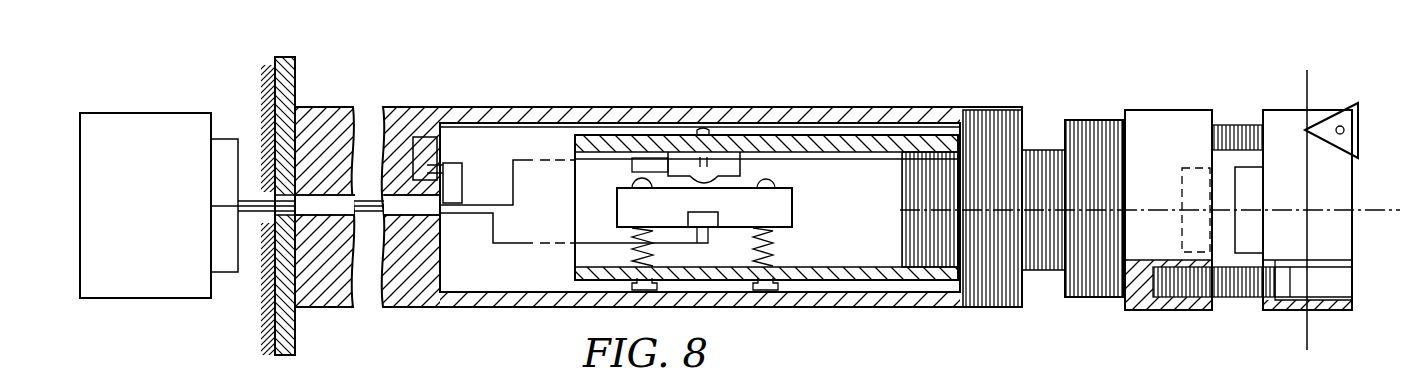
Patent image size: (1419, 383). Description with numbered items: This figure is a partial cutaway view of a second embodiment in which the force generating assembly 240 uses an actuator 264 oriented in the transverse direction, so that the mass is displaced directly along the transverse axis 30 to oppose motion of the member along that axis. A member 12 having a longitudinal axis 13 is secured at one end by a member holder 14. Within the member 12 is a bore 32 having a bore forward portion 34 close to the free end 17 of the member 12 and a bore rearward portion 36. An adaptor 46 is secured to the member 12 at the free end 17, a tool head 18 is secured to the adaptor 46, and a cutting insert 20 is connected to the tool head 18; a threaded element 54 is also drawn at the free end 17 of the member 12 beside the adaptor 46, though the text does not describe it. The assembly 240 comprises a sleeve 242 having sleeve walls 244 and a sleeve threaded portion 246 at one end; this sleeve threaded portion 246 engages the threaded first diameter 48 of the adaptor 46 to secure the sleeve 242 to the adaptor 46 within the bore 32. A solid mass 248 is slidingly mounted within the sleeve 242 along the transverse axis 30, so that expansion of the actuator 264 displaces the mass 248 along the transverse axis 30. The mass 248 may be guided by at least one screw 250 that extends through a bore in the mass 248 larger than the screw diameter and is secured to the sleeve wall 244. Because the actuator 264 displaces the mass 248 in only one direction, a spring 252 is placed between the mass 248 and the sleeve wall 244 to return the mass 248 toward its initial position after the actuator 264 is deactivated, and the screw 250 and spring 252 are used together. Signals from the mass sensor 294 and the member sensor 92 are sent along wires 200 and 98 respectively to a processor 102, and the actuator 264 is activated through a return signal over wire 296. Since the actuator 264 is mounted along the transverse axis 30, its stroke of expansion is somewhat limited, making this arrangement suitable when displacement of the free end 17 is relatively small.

The processor 102 is at (163, 113).
The member holder 14 is at (288, 57).
The member 12 is at (334, 107).
The bore rearward portion 36 is at (702, 177).
The bore 32 is at (890, 125).
The bore forward portion 34 is at (930, 127).
The member sensor 92 is at (427, 140).
The wire 98 is at (463, 178).
The wire 296 is at (515, 178).
The wire 200 is at (518, 248).
The force generating assembly 240 is at (766, 198).
The sleeve 242 is at (836, 140).
The sleeve walls 244 is at (878, 278).
The sleeve threaded portion 246 is at (925, 182).
The actuator 264 is at (728, 160).
The mass 248 is at (778, 206).
The screw 250 is at (765, 185).
The spring 252 is at (774, 240).
The mass sensor 294 is at (688, 216).
The threaded bushing 54 is at (990, 308).
The threaded first diameter 48 is at (1040, 270).
The free end 17 is at (1022, 118).
The adaptor 46 is at (1152, 312).
The longitudinal axis 13 is at (1380, 210).
The tool head 18 is at (1355, 235).
The cutting insert 20 is at (1360, 112).
The transverse axis 30 is at (1310, 325).